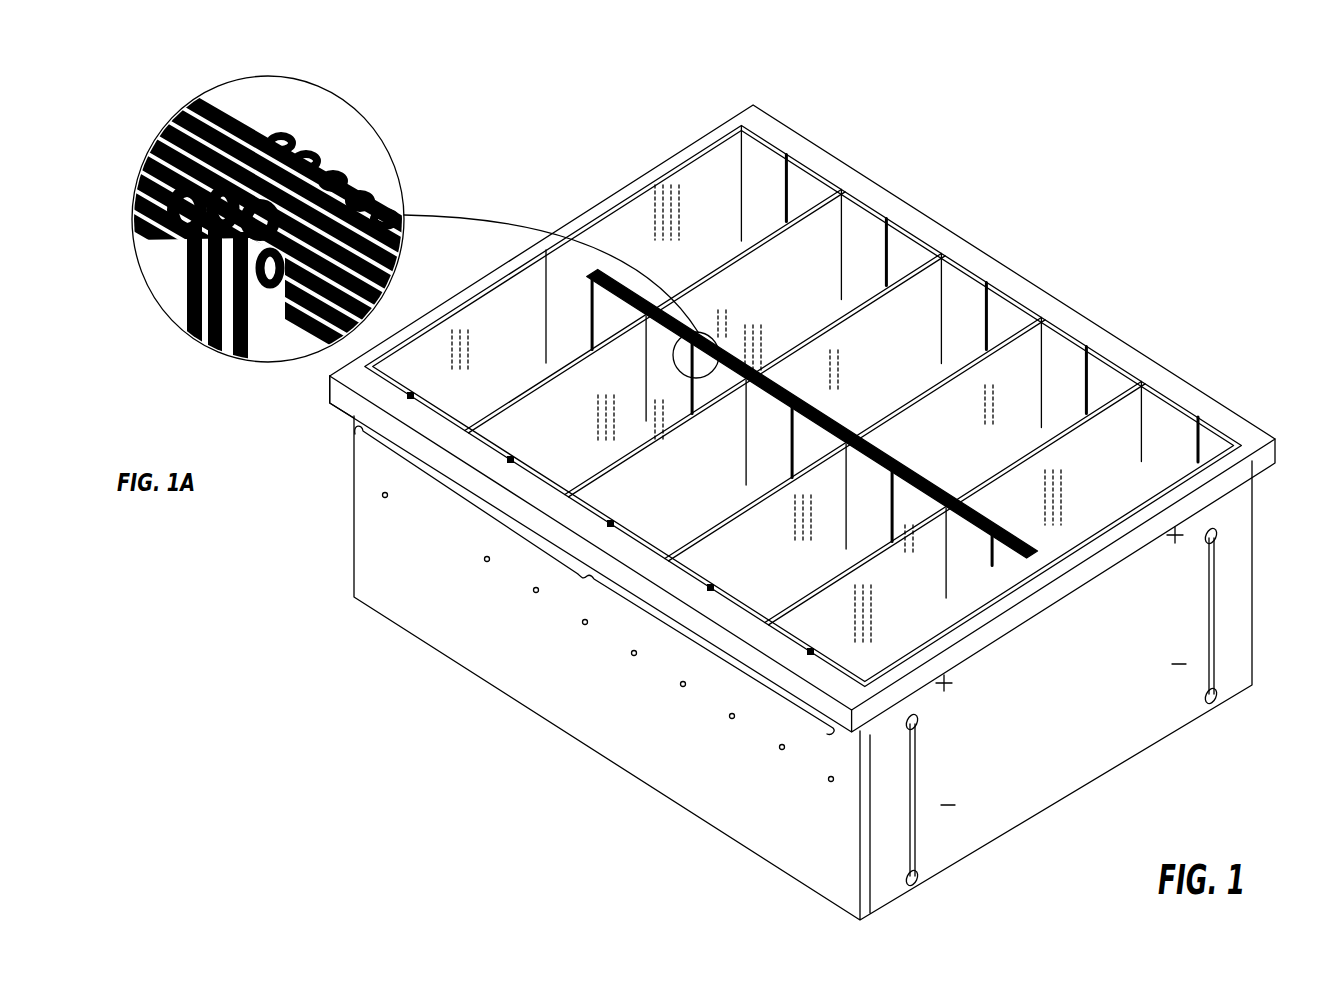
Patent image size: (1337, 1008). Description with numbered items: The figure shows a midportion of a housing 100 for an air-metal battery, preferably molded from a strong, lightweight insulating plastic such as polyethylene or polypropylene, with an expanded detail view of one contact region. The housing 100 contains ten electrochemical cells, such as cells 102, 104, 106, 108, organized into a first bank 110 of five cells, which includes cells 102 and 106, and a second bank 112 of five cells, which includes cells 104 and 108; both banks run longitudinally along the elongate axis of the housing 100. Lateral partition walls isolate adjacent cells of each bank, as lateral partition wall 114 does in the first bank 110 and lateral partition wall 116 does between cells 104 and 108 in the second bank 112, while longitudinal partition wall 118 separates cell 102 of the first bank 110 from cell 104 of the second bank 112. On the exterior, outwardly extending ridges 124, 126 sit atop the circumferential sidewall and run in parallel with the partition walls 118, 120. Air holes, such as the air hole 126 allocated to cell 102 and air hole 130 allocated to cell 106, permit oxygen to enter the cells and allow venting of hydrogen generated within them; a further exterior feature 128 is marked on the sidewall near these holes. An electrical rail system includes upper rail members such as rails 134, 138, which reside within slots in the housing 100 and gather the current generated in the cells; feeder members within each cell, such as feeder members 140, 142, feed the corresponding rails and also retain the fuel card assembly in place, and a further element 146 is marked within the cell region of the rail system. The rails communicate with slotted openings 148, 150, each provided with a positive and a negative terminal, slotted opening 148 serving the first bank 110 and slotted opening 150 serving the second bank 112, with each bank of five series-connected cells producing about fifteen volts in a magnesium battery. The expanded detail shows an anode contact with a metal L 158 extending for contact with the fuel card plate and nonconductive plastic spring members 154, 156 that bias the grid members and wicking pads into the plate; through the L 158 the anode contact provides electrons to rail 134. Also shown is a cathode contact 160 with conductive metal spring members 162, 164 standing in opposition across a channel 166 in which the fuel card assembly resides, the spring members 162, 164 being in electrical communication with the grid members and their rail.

In FIG. 1, the housing 100 is at (1013, 262).
In FIG. 1, the electrochemical cell 102 is at (481, 372).
In FIG. 1, the electrochemical cell 104 is at (761, 202).
In FIG. 1, the electrochemical cell 106 is at (560, 441).
In FIG. 1, the electrochemical cell 108 is at (849, 250).
In FIG. 1, the first bank 110 is at (803, 668).
In FIG. 1, the second bank 112 is at (1336, 300).
In FIG. 1, the lateral partition wall 114 is at (698, 341).
In FIG. 1, the lateral partition wall 116 is at (905, 480).
In FIG. 1, the longitudinal partition wall 118 is at (546, 345).
In FIG. 1, the lateral partition wall 120 is at (688, 400).
In FIG. 1, the outwardly extending ridge 124 is at (328, 380).
In FIG. 1, the outwardly extending ridge / air hole 126 is at (744, 160).
In FIG. 1, the fastener 128 is at (382, 495).
In FIG. 1, the air hole 130 is at (431, 527).
In FIG. 1, the upper rail member 134 is at (574, 258).
In FIG. 1, the upper rail member 138 is at (972, 265).
In FIG. 1, the feeder member 140 is at (590, 342).
In FIG. 1, the feeder member 142 is at (884, 270).
In FIG. 1, the divider rail 146 is at (620, 437).
In FIG. 1, the slotted opening 148 is at (917, 793).
In FIG. 1, the slotted opening 150 is at (1208, 633).
In FIG. 1A, the nonconductive spring member 154 is at (160, 212).
In FIG. 1A, the nonconductive spring member 156 is at (404, 335).
In FIG. 1A, the metal L 158 is at (198, 338).
In FIG. 1A, the cathode contact 160 is at (330, 110).
In FIG. 1A, the conductive spring member 162 is at (240, 103).
In FIG. 1A, the conductive spring member 164 is at (350, 180).
In FIG. 1A, the channel 166 is at (283, 142).